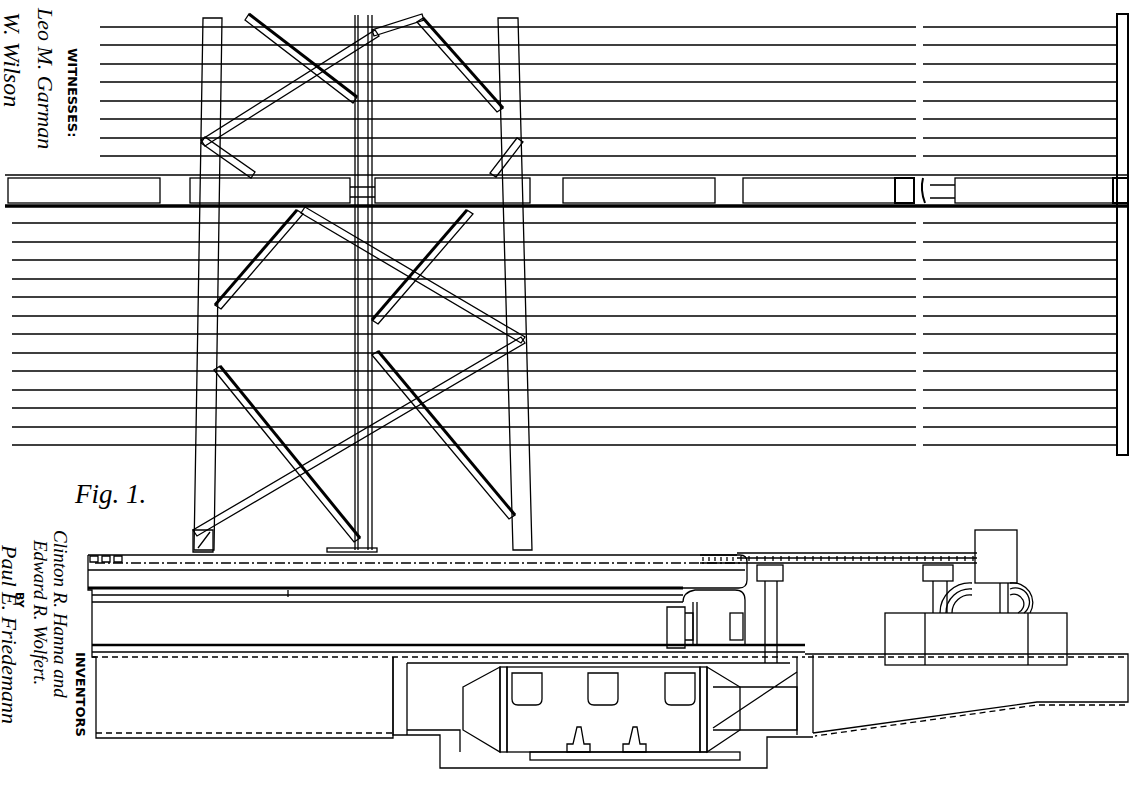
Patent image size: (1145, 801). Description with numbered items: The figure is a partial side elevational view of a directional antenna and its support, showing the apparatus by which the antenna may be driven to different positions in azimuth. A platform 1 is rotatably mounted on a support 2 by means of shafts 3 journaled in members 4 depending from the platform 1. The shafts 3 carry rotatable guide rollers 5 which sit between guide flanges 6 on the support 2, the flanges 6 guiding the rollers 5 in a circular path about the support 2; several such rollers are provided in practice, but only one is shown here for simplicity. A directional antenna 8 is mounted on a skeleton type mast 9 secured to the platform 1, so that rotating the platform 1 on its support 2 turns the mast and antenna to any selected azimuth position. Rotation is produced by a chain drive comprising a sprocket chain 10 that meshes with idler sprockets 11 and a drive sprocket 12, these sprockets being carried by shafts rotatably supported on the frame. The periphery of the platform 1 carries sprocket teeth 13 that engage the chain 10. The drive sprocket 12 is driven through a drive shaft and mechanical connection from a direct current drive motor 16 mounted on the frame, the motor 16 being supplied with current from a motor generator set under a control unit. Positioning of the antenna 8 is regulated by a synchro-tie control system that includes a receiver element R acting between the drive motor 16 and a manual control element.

The platform 1 is at (255, 727).
The support 2 is at (590, 598).
The shafts 3 is at (738, 620).
The members 4 is at (731, 638).
The guide rollers 5 is at (668, 627).
The guide flanges 6 is at (585, 650).
The directional antenna 8 is at (623, 169).
The skeleton type mast 9 is at (527, 481).
The sprocket chain 10 is at (870, 546).
The idler sprockets 11 is at (772, 554).
The drive sprocket 12 is at (942, 546).
The sprocket teeth 13 is at (706, 554).
The direct current drive motor 16 is at (1020, 601).
The receiver element R is at (1018, 551).